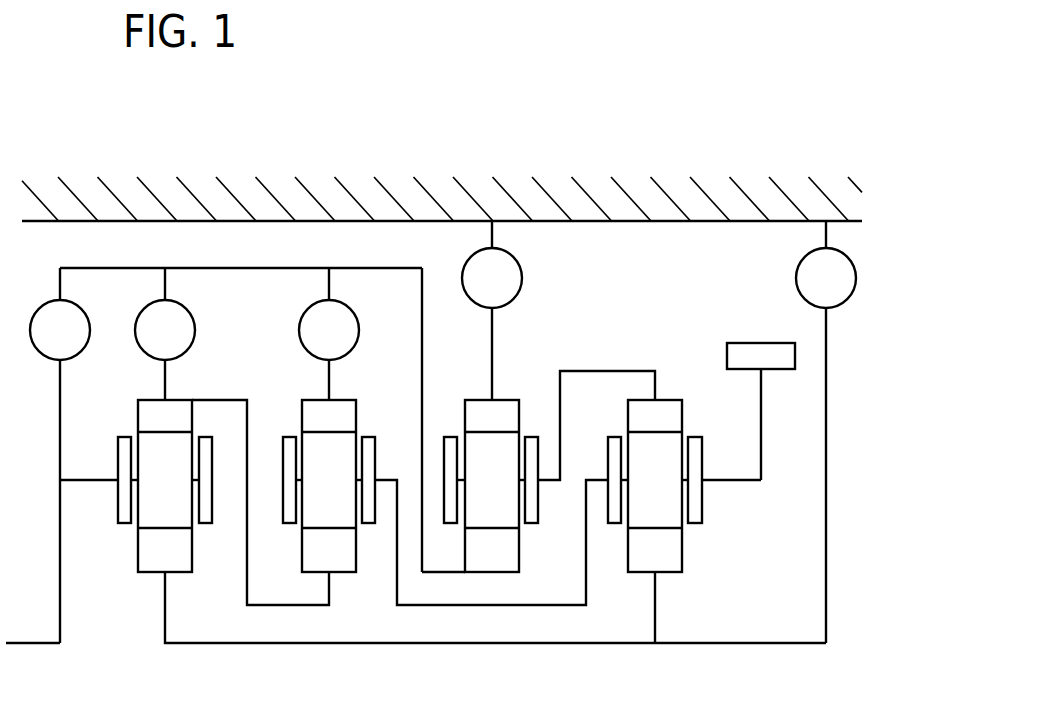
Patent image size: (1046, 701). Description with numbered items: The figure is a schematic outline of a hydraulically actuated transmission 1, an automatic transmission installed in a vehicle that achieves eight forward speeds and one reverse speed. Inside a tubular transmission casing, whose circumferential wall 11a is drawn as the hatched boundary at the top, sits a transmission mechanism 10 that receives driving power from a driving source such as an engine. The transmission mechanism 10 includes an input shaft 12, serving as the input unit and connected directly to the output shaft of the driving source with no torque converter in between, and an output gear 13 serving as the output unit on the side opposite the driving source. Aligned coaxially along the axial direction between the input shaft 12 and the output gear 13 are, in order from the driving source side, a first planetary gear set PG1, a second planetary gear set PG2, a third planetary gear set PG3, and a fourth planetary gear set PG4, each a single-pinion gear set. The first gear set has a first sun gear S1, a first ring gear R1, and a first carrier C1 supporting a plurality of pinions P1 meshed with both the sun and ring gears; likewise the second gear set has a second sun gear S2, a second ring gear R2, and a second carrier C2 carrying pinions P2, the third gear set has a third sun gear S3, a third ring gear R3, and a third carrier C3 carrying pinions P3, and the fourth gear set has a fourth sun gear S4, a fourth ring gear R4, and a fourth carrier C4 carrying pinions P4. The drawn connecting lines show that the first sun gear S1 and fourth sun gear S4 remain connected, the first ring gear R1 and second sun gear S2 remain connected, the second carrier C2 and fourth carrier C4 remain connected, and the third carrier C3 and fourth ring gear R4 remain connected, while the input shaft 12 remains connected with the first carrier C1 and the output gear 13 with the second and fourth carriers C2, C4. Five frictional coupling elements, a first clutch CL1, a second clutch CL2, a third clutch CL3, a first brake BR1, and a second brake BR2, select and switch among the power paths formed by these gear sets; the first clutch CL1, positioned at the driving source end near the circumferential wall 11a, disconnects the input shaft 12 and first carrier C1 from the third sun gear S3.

The hydraulically actuated transmission 1 is at (825, 168).
The transmission mechanism 10 is at (858, 262).
The circumferential wall 11a is at (640, 184).
The input shaft 12 is at (32, 641).
The output gear 13 is at (744, 341).
The first clutch CL1 is at (60, 374).
The second clutch CL2 is at (165, 334).
The third clutch CL3 is at (329, 334).
The first brake BR1 is at (826, 432).
The second brake BR2 is at (492, 310).
The first planetary gear set PG1 is at (195, 457).
The second planetary gear set PG2 is at (360, 457).
The third planetary gear set PG3 is at (522, 442).
The fourth planetary gear set PG4 is at (709, 504).
The first carrier C1 is at (126, 437).
The second carrier C2 is at (291, 437).
The third carrier C3 is at (452, 437).
The fourth carrier C4 is at (615, 437).
The first ring gear R1 is at (165, 416).
The second ring gear R2 is at (329, 416).
The third ring gear R3 is at (492, 416).
The fourth ring gear R4 is at (655, 416).
The pinions P1 is at (165, 480).
The pinions P2 is at (329, 480).
The pinions P3 is at (492, 480).
The pinions P4 is at (655, 480).
The first sun gear S1 is at (165, 550).
The second sun gear S2 is at (329, 550).
The third sun gear S3 is at (492, 550).
The fourth sun gear S4 is at (655, 550).